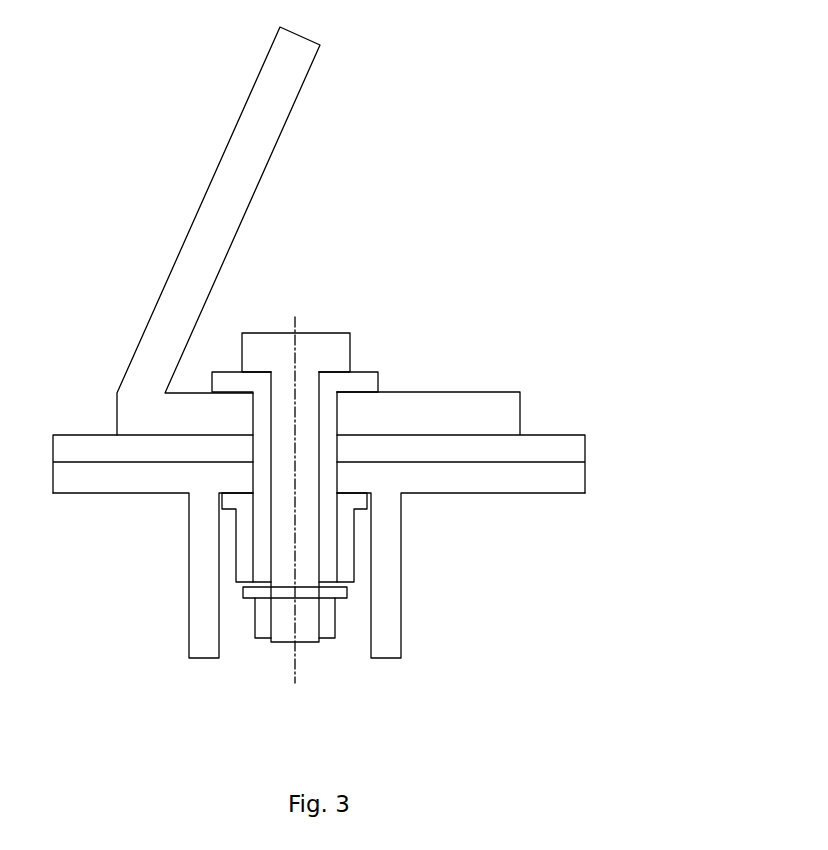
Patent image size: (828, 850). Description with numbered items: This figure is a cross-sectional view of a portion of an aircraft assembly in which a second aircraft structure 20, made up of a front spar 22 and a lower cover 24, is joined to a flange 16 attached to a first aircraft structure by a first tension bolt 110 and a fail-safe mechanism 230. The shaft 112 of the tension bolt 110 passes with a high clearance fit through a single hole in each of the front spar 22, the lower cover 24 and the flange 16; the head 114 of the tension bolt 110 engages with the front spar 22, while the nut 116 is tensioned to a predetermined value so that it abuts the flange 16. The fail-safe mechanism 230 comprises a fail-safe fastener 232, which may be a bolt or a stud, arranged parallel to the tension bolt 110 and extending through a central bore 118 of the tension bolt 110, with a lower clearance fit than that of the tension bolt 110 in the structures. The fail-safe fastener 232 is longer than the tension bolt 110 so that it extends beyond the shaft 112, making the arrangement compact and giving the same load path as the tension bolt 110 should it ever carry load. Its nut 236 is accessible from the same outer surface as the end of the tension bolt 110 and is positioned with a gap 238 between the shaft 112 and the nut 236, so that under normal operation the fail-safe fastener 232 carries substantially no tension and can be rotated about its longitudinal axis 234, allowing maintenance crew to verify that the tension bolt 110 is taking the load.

The flange 16 is at (538, 492).
The second aircraft structure 20 is at (268, 221).
The front spar 22 is at (317, 60).
The lower cover 24 is at (585, 445).
The first tension bolt 110 is at (306, 441).
The shaft 112 is at (230, 509).
The head 114 is at (382, 378).
The nut 116 is at (355, 530).
The central bore 118 is at (268, 527).
The fail-safe mechanism 230 is at (256, 479).
The fail-safe fastener 232 is at (298, 333).
The longitudinal axis 234 is at (293, 673).
The nut 236 is at (327, 638).
The gap 238 is at (245, 587).